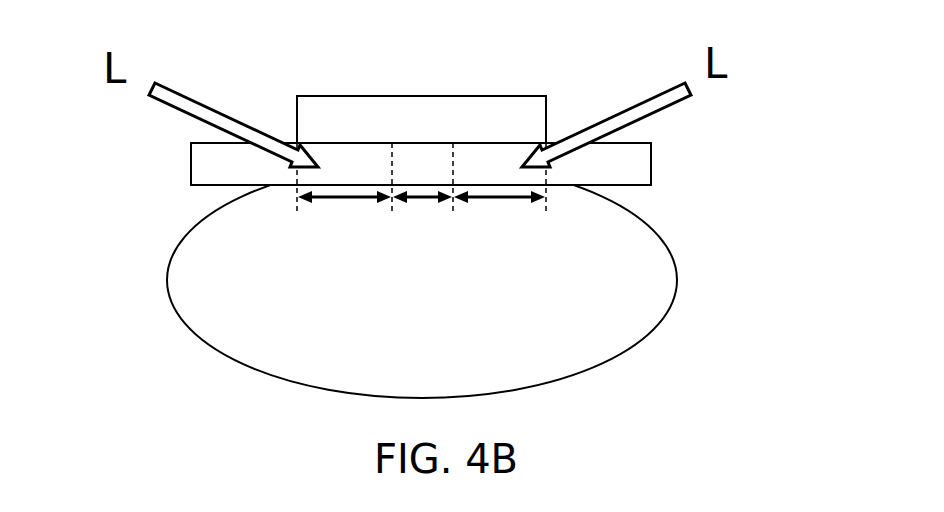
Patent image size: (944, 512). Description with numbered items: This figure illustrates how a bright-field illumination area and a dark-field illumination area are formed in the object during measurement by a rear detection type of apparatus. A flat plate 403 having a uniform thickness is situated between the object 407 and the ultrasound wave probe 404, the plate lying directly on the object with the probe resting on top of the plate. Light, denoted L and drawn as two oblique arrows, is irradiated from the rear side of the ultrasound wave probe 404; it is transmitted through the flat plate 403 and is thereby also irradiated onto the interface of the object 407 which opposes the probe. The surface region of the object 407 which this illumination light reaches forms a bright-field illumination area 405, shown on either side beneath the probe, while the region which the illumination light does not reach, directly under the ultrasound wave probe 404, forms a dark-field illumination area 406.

The flat plate 403 is at (651, 163).
The ultrasound wave probe 404 is at (422, 95).
The bright-field illumination area 405 is at (333, 210).
The dark-field illumination area 406 is at (417, 210).
The object 407 is at (677, 277).